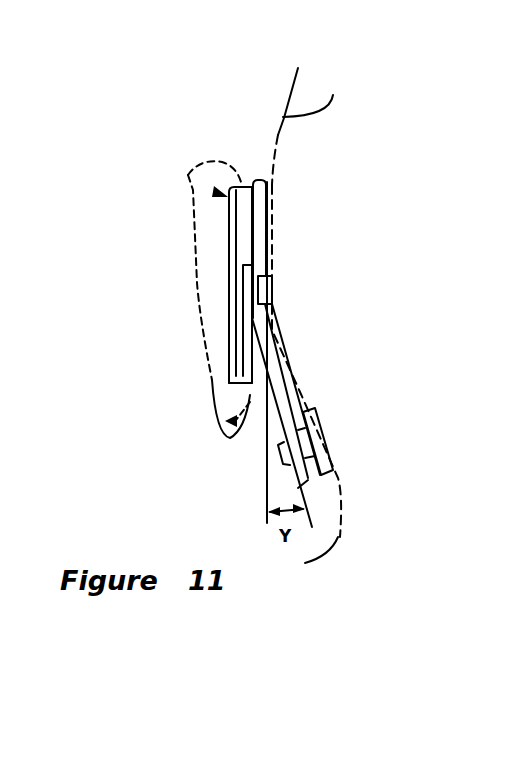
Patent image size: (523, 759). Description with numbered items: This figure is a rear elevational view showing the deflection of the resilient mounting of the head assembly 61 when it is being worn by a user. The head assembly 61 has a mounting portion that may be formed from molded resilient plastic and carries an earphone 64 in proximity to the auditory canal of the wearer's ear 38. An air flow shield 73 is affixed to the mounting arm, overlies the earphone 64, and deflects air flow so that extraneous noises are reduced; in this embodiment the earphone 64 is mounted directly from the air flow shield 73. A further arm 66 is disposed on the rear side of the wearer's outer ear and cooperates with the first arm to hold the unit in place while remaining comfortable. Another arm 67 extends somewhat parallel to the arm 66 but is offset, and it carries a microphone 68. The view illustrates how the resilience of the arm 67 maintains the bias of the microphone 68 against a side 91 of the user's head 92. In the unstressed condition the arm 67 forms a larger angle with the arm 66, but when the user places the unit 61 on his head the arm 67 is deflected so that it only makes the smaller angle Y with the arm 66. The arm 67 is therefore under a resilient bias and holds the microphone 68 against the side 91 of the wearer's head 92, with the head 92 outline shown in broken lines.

The ear 38 is at (200, 317).
The head assembly 61 is at (220, 193).
The earphone 64 is at (236, 349).
The further arm 66 is at (248, 386).
The further arm 67 is at (275, 385).
The microphone 68 is at (320, 430).
The air flow shield 73 is at (228, 240).
The side of the user's head 91 is at (305, 563).
The user's head 92 is at (333, 95).